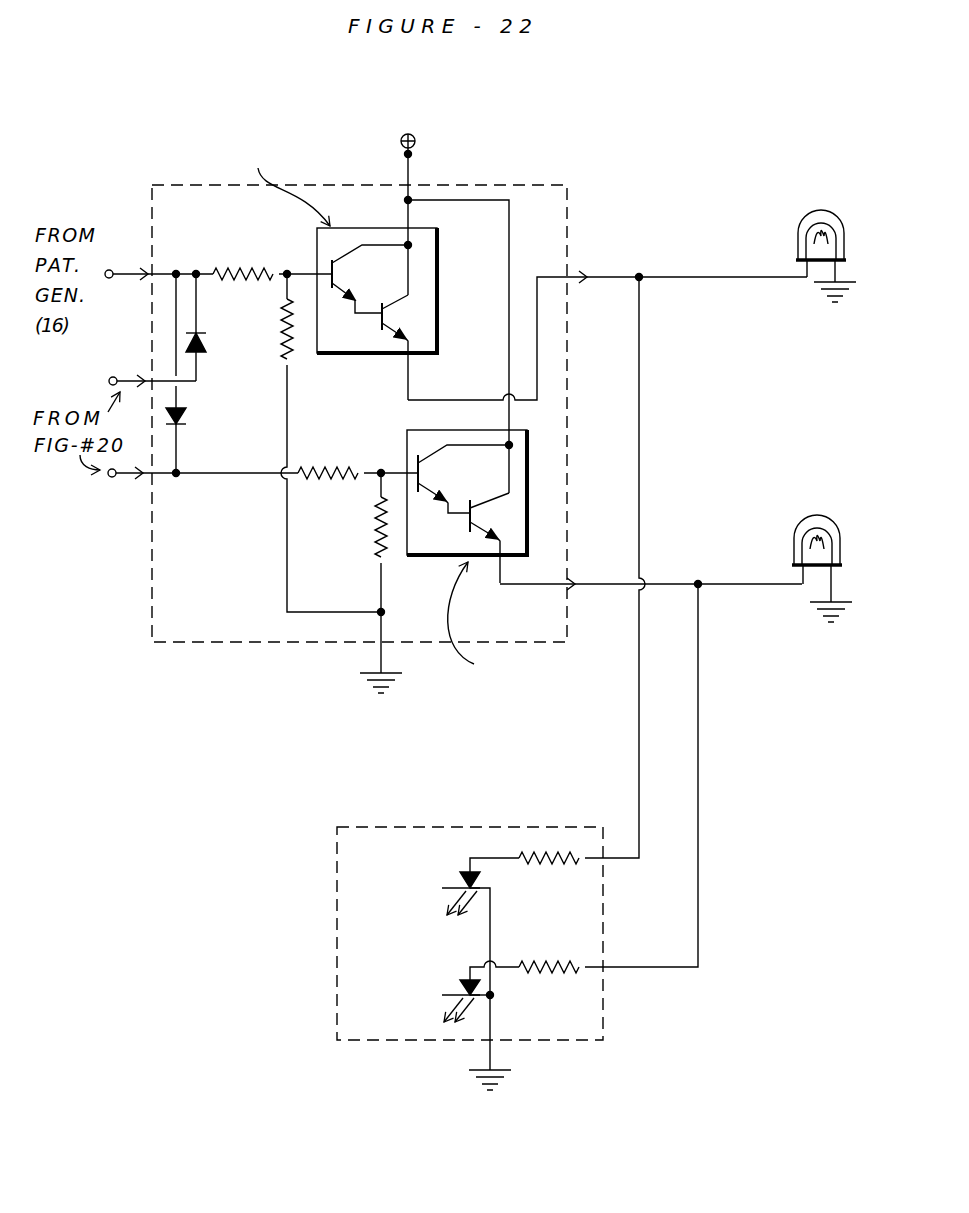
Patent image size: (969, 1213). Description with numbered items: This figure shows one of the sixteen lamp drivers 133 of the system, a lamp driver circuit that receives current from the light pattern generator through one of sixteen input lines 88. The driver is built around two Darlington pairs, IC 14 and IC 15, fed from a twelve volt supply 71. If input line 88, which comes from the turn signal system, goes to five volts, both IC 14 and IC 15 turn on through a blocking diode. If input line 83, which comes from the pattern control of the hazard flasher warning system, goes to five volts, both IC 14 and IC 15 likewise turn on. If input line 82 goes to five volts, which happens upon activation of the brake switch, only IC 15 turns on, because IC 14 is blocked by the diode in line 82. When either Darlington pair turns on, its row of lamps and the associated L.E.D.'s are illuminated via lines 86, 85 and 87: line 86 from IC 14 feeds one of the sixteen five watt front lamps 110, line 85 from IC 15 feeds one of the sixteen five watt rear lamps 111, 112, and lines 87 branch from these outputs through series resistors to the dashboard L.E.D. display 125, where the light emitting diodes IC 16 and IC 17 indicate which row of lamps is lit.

The lamp driver 133 is at (414, 388).
The 12 volt supply 71 is at (406, 156).
The input line 88 is at (126, 268).
The input line 83 is at (110, 378).
The input line 82 is at (118, 478).
The line 86 is at (626, 282).
The line 85 is at (610, 580).
The line 87 is at (698, 706).
The front lamps 110 is at (808, 208).
The rear lamps 111 is at (780, 519).
The rear lamps 112 is at (800, 535).
The dashboard LED display 125 is at (425, 822).
The IC 14 is at (377, 314).
The IC 15 is at (467, 506).
The IC 16 is at (422, 971).
The IC 17 is at (418, 1001).